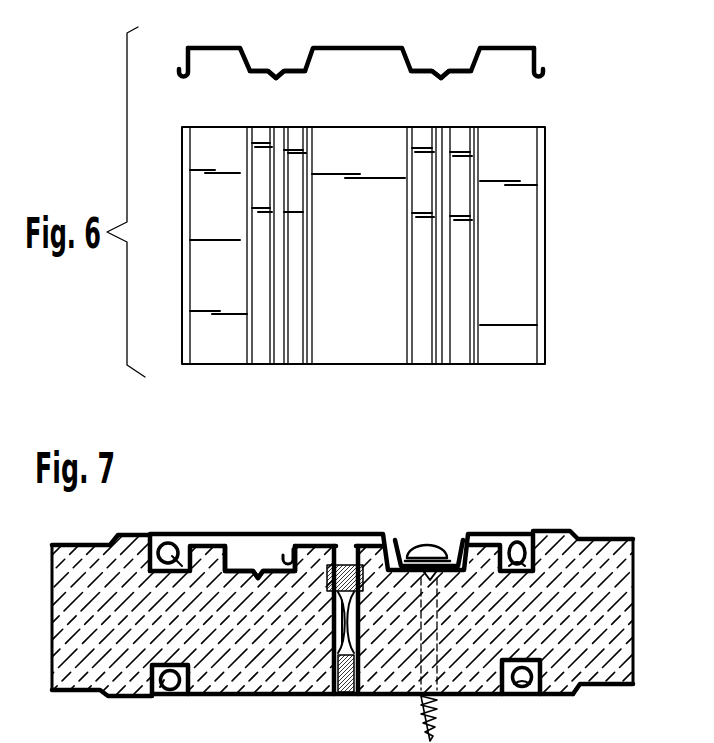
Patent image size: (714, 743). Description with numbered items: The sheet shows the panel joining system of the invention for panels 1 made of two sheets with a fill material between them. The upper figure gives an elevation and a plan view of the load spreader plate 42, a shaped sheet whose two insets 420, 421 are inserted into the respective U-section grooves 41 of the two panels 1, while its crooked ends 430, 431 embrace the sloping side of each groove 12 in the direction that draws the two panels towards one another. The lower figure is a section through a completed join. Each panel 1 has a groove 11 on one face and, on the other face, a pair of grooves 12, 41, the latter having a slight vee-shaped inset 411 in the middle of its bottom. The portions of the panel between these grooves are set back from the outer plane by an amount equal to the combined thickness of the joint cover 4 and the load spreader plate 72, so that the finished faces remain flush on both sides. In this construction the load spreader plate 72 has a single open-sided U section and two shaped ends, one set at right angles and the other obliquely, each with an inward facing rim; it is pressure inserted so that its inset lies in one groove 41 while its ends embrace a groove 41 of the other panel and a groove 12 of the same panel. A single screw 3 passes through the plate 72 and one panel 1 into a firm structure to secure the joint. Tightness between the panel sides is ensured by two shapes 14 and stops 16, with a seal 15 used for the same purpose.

In FIG. 6, the load spreader plate 42 is at (370, 48).
In FIG. 6, the inset 420 is at (256, 74).
In FIG. 6, the inset 421 is at (462, 73).
In FIG. 6, the crooked end 430 is at (185, 68).
In FIG. 6, the crooked end 431 is at (543, 68).
In FIG. 7, the panel 1 is at (80, 558).
In FIG. 7, the joint cover 4 is at (286, 532).
In FIG. 7, the second groove 41 is at (232, 556).
In FIG. 7, the inset 411 is at (258, 562).
In FIG. 7, the first groove 12 is at (165, 546).
In FIG. 7, the shape 14 is at (331, 568).
In FIG. 7, the seal 15 is at (283, 714).
In FIG. 7, the stop 16 is at (349, 696).
In FIG. 7, the load spreader plate 72 is at (404, 547).
In FIG. 7, the screw 3 is at (422, 724).
In FIG. 7, the groove 11 is at (170, 691).